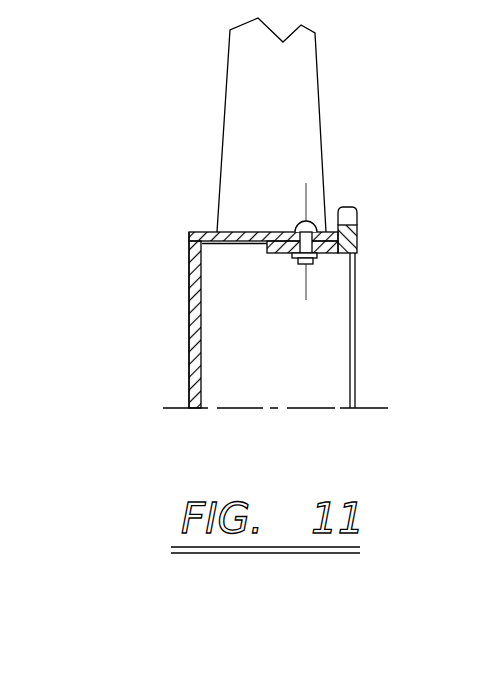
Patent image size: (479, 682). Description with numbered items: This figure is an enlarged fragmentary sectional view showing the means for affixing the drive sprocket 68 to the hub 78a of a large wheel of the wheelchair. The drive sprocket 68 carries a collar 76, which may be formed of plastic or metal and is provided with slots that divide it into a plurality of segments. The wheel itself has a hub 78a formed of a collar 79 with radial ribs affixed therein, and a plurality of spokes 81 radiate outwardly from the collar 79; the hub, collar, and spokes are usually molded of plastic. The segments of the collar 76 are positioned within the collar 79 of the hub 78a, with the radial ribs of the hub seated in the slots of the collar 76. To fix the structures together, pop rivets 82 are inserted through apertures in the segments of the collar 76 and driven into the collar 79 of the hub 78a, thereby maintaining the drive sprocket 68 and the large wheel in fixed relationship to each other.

The spokes 81 is at (316, 86).
The pop rivets 82 is at (300, 228).
The collar 79 is at (245, 232).
The hub 78a is at (200, 342).
The drive sprocket 68 is at (347, 207).
The collar 76 is at (323, 253).